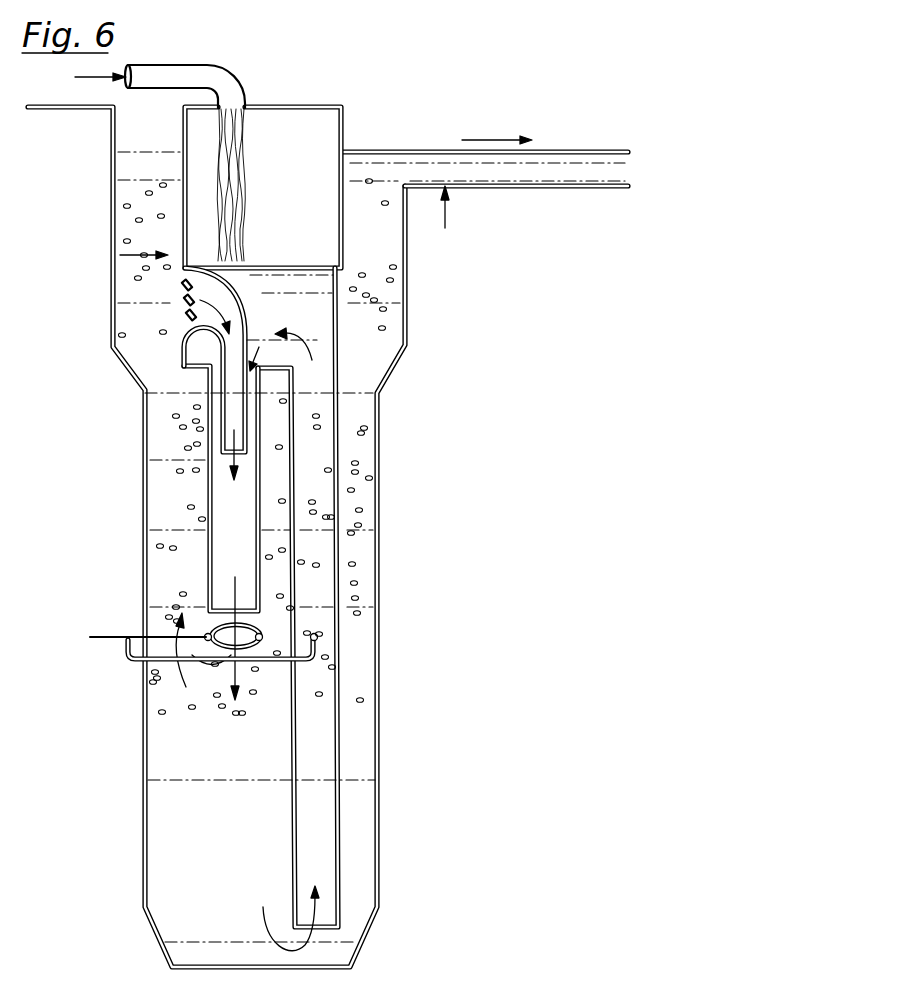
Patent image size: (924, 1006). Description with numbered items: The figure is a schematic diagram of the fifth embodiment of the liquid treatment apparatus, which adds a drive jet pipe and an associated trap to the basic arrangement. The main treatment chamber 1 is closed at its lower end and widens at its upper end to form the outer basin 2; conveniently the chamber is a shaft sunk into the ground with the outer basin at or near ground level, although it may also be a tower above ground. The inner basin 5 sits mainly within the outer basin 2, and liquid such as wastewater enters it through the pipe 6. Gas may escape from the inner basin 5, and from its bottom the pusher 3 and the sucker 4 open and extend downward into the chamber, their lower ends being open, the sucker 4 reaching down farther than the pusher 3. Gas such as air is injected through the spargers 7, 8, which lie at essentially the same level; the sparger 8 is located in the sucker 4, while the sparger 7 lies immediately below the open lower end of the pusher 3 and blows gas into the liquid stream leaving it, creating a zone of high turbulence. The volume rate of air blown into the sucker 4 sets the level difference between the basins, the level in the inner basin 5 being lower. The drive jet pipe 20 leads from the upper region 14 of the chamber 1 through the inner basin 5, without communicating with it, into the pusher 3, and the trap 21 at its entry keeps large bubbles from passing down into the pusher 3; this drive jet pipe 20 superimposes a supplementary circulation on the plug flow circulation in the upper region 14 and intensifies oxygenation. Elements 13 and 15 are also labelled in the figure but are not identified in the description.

The main treatment chamber 1 is at (355, 492).
The outer basin 2 is at (454, 218).
The pusher 3 is at (225, 573).
The sucker 4 is at (320, 548).
The inner basin 5 is at (288, 140).
The pipe 6 is at (192, 77).
The sparger 7 is at (207, 639).
The sparger 8 is at (319, 637).
The outlet pipe 13 is at (561, 168).
The upper region 14 is at (173, 424).
The lower settling chamber 15 is at (205, 800).
The drive jet pipe 20 is at (232, 403).
The trap 21 is at (185, 300).